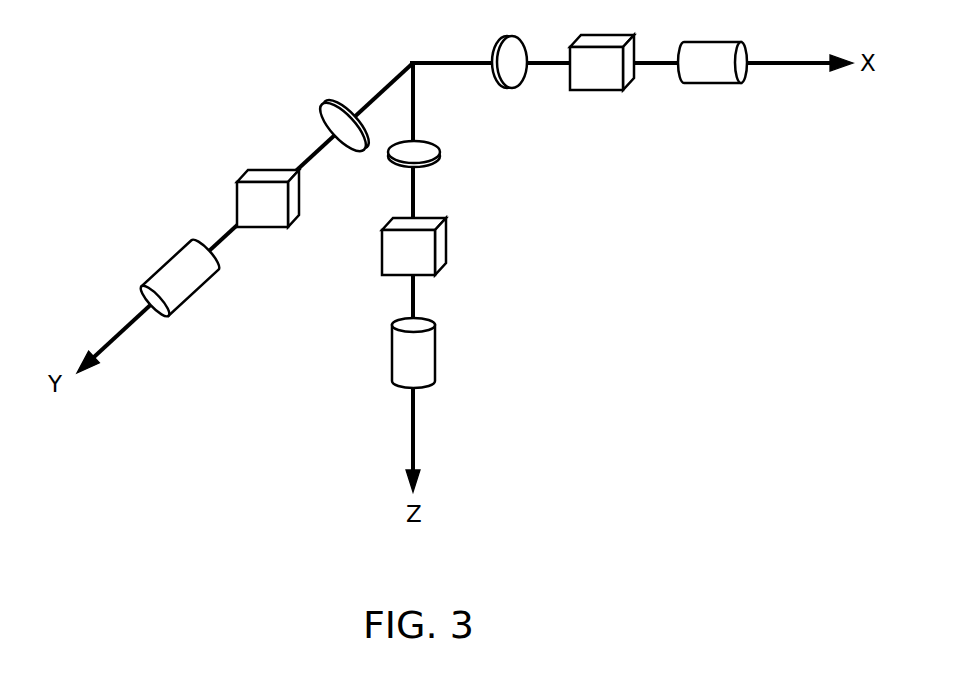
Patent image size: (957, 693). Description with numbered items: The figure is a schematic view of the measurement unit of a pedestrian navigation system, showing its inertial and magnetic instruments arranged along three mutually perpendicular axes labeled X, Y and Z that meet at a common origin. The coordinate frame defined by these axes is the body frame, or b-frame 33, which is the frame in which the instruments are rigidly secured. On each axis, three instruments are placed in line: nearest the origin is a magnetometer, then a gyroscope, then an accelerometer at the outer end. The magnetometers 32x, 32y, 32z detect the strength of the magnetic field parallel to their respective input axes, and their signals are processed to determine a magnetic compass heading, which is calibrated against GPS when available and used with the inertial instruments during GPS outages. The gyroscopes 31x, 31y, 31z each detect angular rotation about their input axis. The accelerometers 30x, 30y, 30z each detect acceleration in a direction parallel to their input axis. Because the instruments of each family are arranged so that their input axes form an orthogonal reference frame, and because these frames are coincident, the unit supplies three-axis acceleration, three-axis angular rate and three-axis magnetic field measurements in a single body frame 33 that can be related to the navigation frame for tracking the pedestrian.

The accelerometer 30x is at (716, 84).
The gyroscope 31x is at (610, 90).
The magnetometer 32x is at (513, 88).
The accelerometer 30y is at (168, 262).
The gyroscope 31y is at (243, 170).
The magnetometer 32y is at (328, 105).
The accelerometer 30z is at (435, 360).
The gyroscope 31z is at (447, 242).
The magnetometer 32z is at (440, 155).
The body frame 33 is at (414, 58).